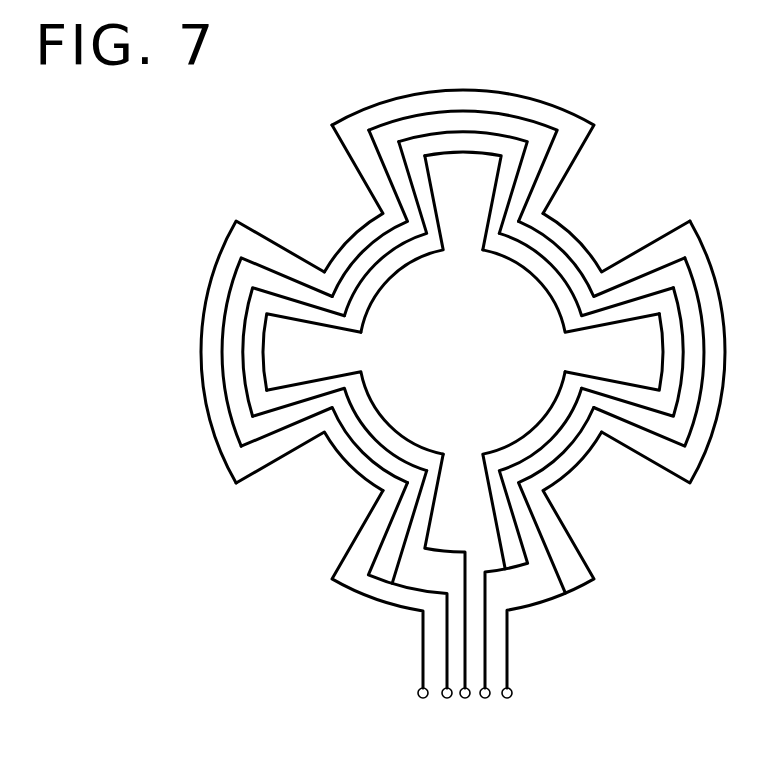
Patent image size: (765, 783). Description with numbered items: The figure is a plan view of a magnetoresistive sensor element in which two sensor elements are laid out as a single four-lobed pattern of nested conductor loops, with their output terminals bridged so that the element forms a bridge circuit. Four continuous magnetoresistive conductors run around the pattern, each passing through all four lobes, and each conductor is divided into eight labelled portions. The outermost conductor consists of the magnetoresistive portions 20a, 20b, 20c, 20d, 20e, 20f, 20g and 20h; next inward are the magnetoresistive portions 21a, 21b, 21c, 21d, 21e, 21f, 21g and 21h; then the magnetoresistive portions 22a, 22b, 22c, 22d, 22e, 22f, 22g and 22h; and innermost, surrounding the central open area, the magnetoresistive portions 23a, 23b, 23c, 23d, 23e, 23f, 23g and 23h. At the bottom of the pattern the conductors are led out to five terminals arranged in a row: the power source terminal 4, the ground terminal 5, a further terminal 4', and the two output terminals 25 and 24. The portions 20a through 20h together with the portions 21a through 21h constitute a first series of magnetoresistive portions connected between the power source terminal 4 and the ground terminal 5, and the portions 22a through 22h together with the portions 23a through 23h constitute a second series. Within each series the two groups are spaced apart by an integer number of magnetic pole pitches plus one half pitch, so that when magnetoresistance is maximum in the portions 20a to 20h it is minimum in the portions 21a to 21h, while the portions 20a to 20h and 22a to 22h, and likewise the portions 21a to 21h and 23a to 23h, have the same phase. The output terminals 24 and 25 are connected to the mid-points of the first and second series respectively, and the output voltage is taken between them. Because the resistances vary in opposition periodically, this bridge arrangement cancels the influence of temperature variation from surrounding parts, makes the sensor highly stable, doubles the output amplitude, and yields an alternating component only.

The magnetoresistive portion 20a is at (238, 485).
The magnetoresistive portion 20b is at (238, 219).
The magnetoresistive portion 20c is at (331, 137).
The magnetoresistive portion 20d is at (592, 129).
The magnetoresistive portion 20e is at (688, 219).
The magnetoresistive portion 20f is at (690, 485).
The magnetoresistive portion 20g is at (596, 577).
The magnetoresistive portion 20h is at (343, 560).
The magnetoresistive portion 21a is at (681, 445).
The magnetoresistive portion 21b is at (672, 262).
The magnetoresistive portion 21c is at (549, 150).
The magnetoresistive portion 21d is at (377, 150).
The magnetoresistive portion 21e is at (250, 256).
The magnetoresistive portion 21f is at (258, 439).
The magnetoresistive portion 21g is at (377, 559).
The magnetoresistive portion 21h is at (548, 551).
The magnetoresistive portion 22a is at (290, 405).
The magnetoresistive portion 22b is at (283, 296).
The magnetoresistive portion 22c is at (409, 176).
The magnetoresistive portion 22d is at (515, 180).
The magnetoresistive portion 22e is at (640, 298).
The magnetoresistive portion 22f is at (668, 414).
The magnetoresistive portion 22g is at (519, 530).
The magnetoresistive portion 22h is at (407, 537).
The magnetoresistive portion 23a is at (650, 385).
The magnetoresistive portion 23b is at (608, 324).
The magnetoresistive portion 23c is at (493, 200).
The magnetoresistive portion 23d is at (433, 200).
The magnetoresistive portion 23e is at (306, 321).
The magnetoresistive portion 23f is at (308, 382).
The magnetoresistive portion 23g is at (434, 508).
The magnetoresistive portion 23h is at (493, 498).
The power source terminal 4 is at (416, 721).
The ground terminal 5 is at (446, 698).
The terminal 4' is at (472, 721).
The output terminal 25 is at (485, 698).
The output terminal 24 is at (507, 698).